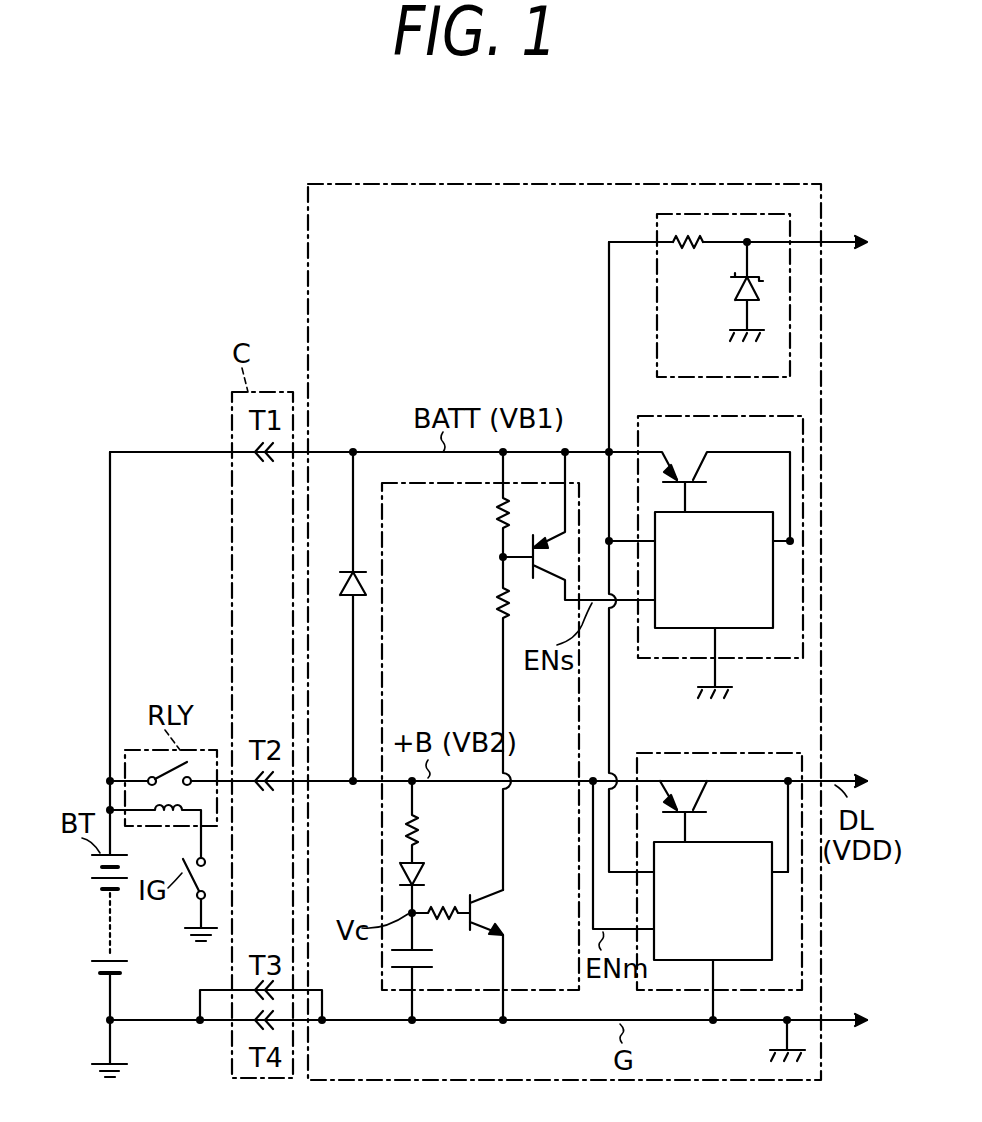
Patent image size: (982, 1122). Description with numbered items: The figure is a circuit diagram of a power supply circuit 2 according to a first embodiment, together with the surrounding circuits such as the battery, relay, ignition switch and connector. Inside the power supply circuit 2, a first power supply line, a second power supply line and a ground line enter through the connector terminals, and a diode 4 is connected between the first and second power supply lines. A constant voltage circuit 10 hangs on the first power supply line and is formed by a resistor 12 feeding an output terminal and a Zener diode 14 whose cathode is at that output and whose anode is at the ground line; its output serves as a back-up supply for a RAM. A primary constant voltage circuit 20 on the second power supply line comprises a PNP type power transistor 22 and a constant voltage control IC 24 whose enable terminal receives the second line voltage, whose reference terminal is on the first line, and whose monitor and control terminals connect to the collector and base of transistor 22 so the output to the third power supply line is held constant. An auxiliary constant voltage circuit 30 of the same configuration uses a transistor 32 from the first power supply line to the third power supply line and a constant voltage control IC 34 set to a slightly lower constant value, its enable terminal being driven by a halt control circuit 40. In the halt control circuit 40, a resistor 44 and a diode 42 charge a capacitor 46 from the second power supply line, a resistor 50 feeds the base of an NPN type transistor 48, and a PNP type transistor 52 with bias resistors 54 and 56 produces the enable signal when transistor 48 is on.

The power supply circuit 2 is at (774, 184).
The diode 4 is at (350, 572).
The constant voltage circuit 10 is at (745, 378).
The resistor 12 is at (685, 250).
The Zener diode 14 is at (742, 276).
The primary constant voltage circuit 20 is at (683, 752).
The PNP type power transistor 22 is at (697, 798).
The constant voltage control IC 24 is at (724, 840).
The auxiliary constant voltage circuit 30 is at (690, 659).
The transistor 32 is at (697, 465).
The constant voltage control IC 34 is at (731, 504).
The halt control circuit 40 is at (380, 846).
The diode 42 is at (418, 862).
The resistor 44 is at (418, 822).
The capacitor 46 is at (432, 960).
The NPN type transistor 48 is at (487, 897).
The resistor 50 is at (445, 906).
The PNP type transistor 52 is at (534, 572).
The resistor 54 is at (495, 507).
The resistor 56 is at (495, 597).